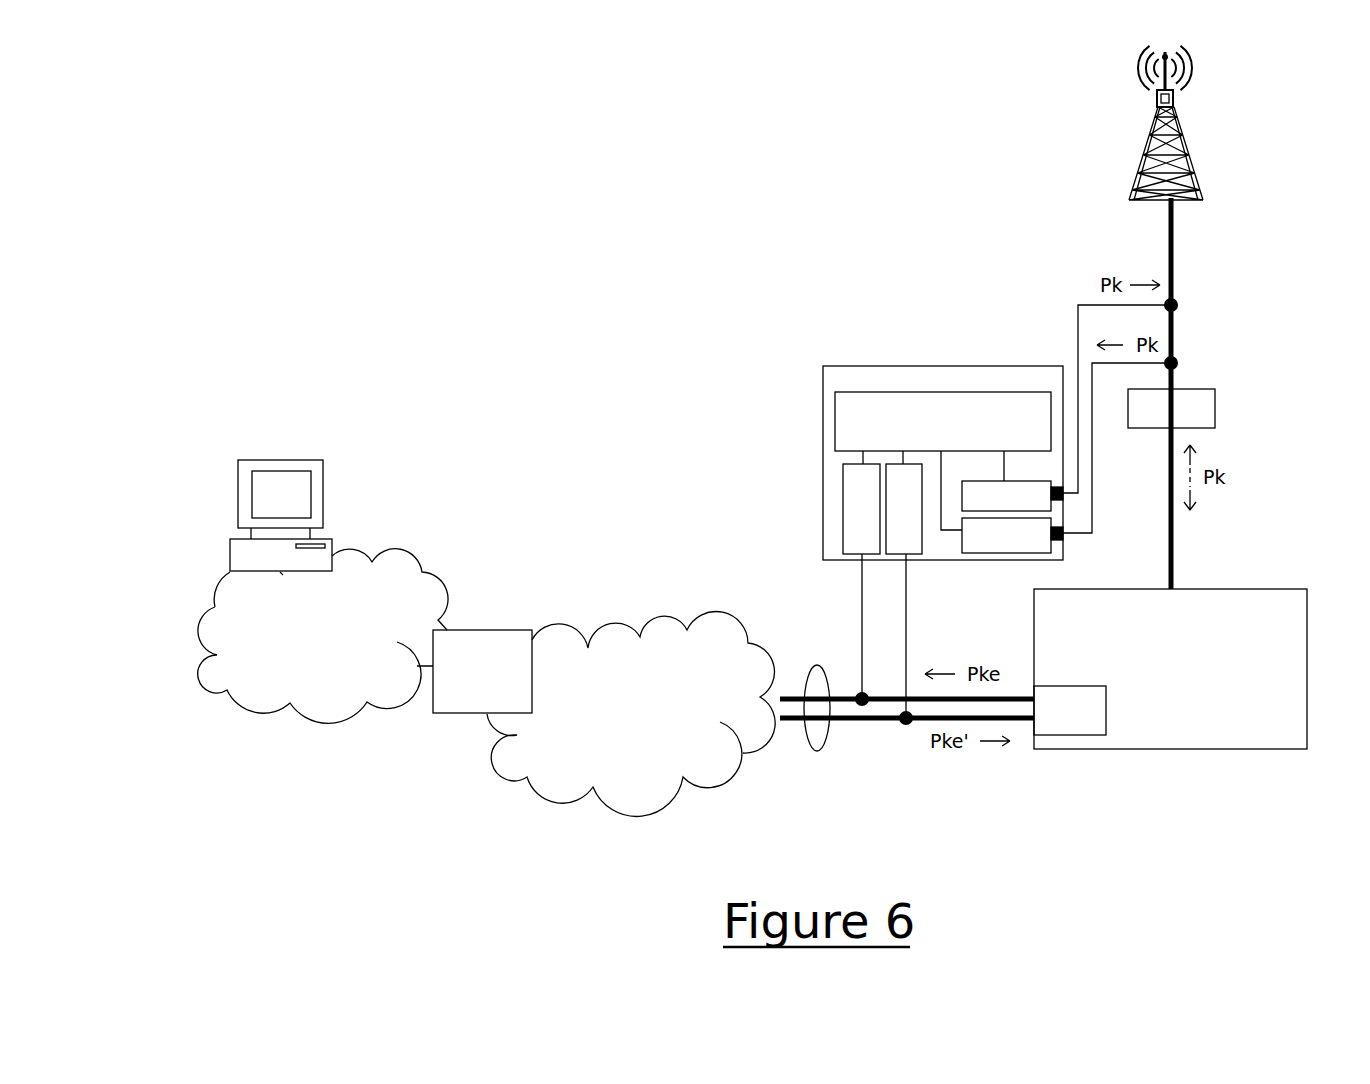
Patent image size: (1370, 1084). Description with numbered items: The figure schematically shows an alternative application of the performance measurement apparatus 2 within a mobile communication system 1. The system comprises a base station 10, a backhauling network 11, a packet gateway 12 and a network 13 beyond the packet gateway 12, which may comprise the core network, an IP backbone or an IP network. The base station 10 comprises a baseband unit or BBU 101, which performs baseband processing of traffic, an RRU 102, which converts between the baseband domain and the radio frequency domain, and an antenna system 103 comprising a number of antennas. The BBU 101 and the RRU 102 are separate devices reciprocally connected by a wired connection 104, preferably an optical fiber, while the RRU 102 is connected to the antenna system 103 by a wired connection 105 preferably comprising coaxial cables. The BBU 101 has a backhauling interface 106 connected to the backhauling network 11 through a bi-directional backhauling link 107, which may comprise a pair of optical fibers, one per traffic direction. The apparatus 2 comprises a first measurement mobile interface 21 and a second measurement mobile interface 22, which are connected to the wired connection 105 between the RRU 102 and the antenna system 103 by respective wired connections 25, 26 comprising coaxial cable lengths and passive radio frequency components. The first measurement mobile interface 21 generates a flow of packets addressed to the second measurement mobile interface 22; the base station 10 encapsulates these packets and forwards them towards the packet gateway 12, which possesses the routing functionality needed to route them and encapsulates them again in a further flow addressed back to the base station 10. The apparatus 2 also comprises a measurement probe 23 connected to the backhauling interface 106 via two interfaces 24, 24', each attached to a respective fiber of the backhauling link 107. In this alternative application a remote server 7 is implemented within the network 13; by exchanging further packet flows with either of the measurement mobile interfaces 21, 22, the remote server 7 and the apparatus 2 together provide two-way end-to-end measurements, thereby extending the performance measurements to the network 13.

The mobile communication system 1 is at (659, 441).
The performance measurement apparatus 2 is at (943, 364).
The remote server 7 is at (280, 459).
The base station 10 is at (1285, 273).
The backhauling network 11 is at (633, 815).
The packet gateway 12 is at (483, 628).
The network 13 is at (193, 635).
The first measurement mobile interface 21 is at (1012, 496).
The second measurement mobile interface 22 is at (1012, 535).
The measurement probe 23 is at (943, 421).
The interface 24 is at (861, 509).
The interface 24' is at (904, 509).
The wired connection 25 is at (1077, 320).
The wired connection 26 is at (1092, 490).
The baseband unit (BBU) 101 is at (1307, 668).
The RRU 102 is at (1217, 408).
The antenna system 103 is at (1188, 153).
The wired connection 104 is at (1175, 568).
The wired connection 105 is at (1168, 260).
The backhauling interface 106 is at (1070, 710).
The backhauling link 107 is at (817, 752).